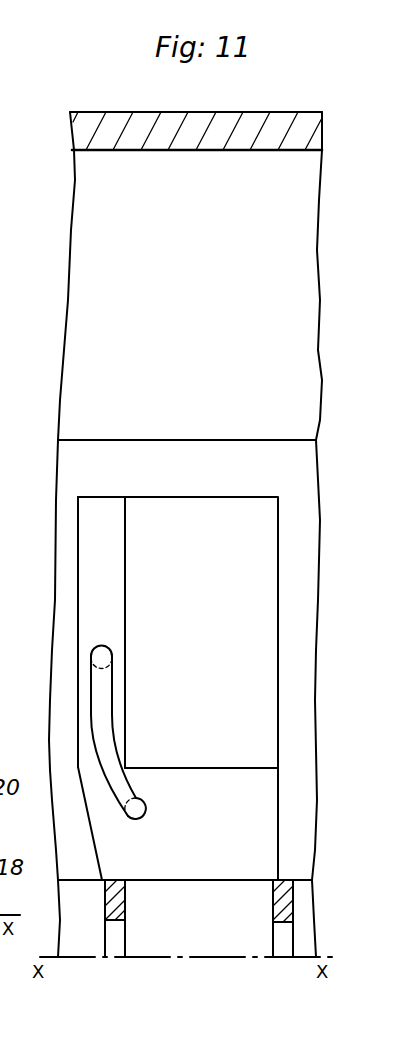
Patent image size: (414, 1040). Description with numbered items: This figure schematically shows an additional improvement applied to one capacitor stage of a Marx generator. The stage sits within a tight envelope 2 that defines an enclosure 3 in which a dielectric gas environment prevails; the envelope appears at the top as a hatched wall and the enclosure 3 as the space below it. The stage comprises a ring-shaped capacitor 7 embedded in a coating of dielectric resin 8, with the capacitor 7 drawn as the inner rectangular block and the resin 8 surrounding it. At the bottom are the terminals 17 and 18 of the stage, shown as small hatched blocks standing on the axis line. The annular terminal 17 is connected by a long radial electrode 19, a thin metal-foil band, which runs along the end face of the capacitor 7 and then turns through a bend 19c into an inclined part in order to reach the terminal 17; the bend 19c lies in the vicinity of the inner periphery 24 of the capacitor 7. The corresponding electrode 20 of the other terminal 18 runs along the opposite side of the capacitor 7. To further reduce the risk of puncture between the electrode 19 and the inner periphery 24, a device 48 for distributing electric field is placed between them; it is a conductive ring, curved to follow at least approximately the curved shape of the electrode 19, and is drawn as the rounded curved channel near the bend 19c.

The tight envelope 2 is at (246, 130).
The enclosure 3 is at (187, 358).
The capacitor 7 is at (178, 688).
The coating of dielectric resin 8 is at (163, 534).
The terminal 17 is at (124, 905).
The terminal 18 is at (273, 910).
The electrode 19 is at (78, 617).
The bend 19c is at (73, 767).
The electrode 20 is at (270, 849).
The inner periphery 24 is at (200, 770).
The device for distributing electric field 48 is at (100, 712).